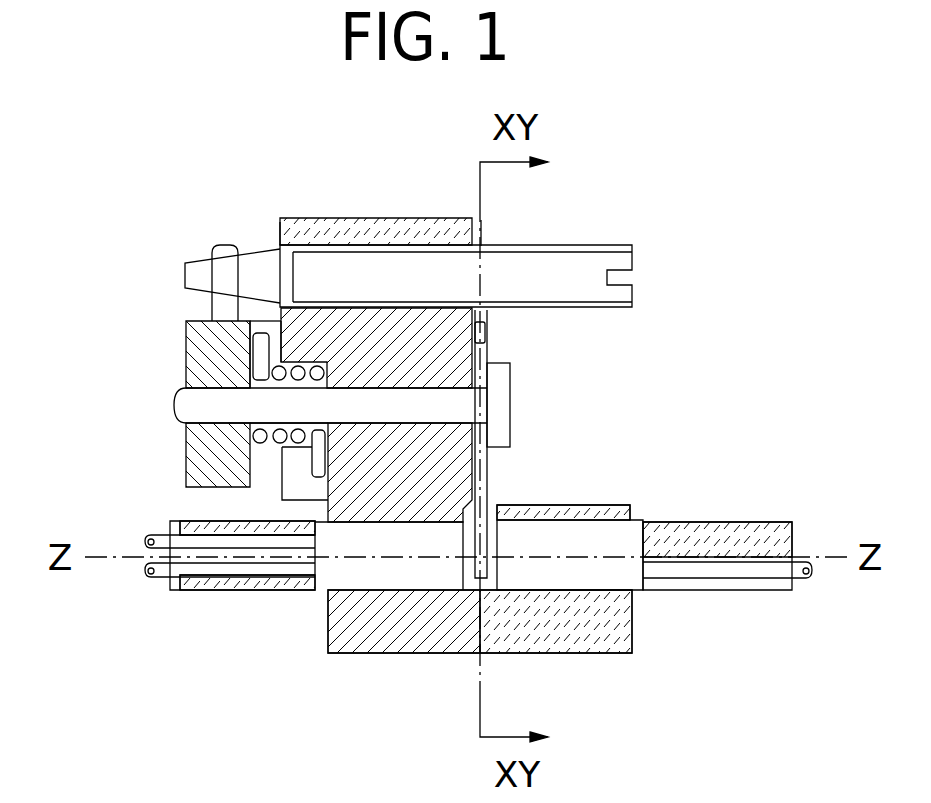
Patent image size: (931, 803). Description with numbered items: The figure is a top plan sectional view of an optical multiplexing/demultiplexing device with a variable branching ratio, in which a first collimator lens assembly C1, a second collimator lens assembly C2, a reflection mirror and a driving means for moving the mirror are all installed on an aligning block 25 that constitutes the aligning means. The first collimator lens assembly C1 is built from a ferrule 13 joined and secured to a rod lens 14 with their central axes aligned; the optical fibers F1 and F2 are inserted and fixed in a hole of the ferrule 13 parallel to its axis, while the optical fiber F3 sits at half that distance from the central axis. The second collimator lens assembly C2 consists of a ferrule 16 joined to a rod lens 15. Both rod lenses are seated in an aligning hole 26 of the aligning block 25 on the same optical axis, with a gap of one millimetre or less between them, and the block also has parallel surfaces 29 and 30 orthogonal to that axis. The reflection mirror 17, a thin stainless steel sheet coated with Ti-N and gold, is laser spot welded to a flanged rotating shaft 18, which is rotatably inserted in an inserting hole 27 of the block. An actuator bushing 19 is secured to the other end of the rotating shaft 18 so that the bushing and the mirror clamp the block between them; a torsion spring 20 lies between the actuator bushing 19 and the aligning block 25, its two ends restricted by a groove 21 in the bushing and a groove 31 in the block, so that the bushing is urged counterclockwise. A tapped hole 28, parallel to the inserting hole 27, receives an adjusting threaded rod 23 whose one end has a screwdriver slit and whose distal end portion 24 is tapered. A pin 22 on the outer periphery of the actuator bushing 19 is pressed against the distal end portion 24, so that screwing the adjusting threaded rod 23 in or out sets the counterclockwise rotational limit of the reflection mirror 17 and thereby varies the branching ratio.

The ferrule 13 is at (193, 583).
The rod lens 14 is at (330, 580).
The rod lens 15 is at (633, 518).
The ferrule 16 is at (775, 530).
The reflection mirror 17 is at (487, 346).
The flanged rotating shaft 18 is at (501, 408).
The actuator bushing 19 is at (197, 347).
The torsion spring 20 is at (250, 360).
The groove 21 is at (270, 480).
The pin 22 is at (228, 240).
The adjusting threaded rod 23 is at (583, 247).
The distal end portion 24 is at (197, 273).
The aligning block 25 is at (397, 633).
The aligning hole 26 is at (542, 590).
The inserting hole 27 is at (405, 420).
The tapped hole 28 is at (378, 262).
The parallel surface 29 is at (483, 235).
The parallel surface 30 is at (276, 236).
The groove 31 is at (297, 487).
The first collimator lens assembly C1 is at (300, 592).
The second collimator lens assembly C2 is at (640, 592).
The optical fiber F1 is at (180, 521).
The optical fiber F2 is at (180, 590).
The optical fiber F3 is at (790, 592).